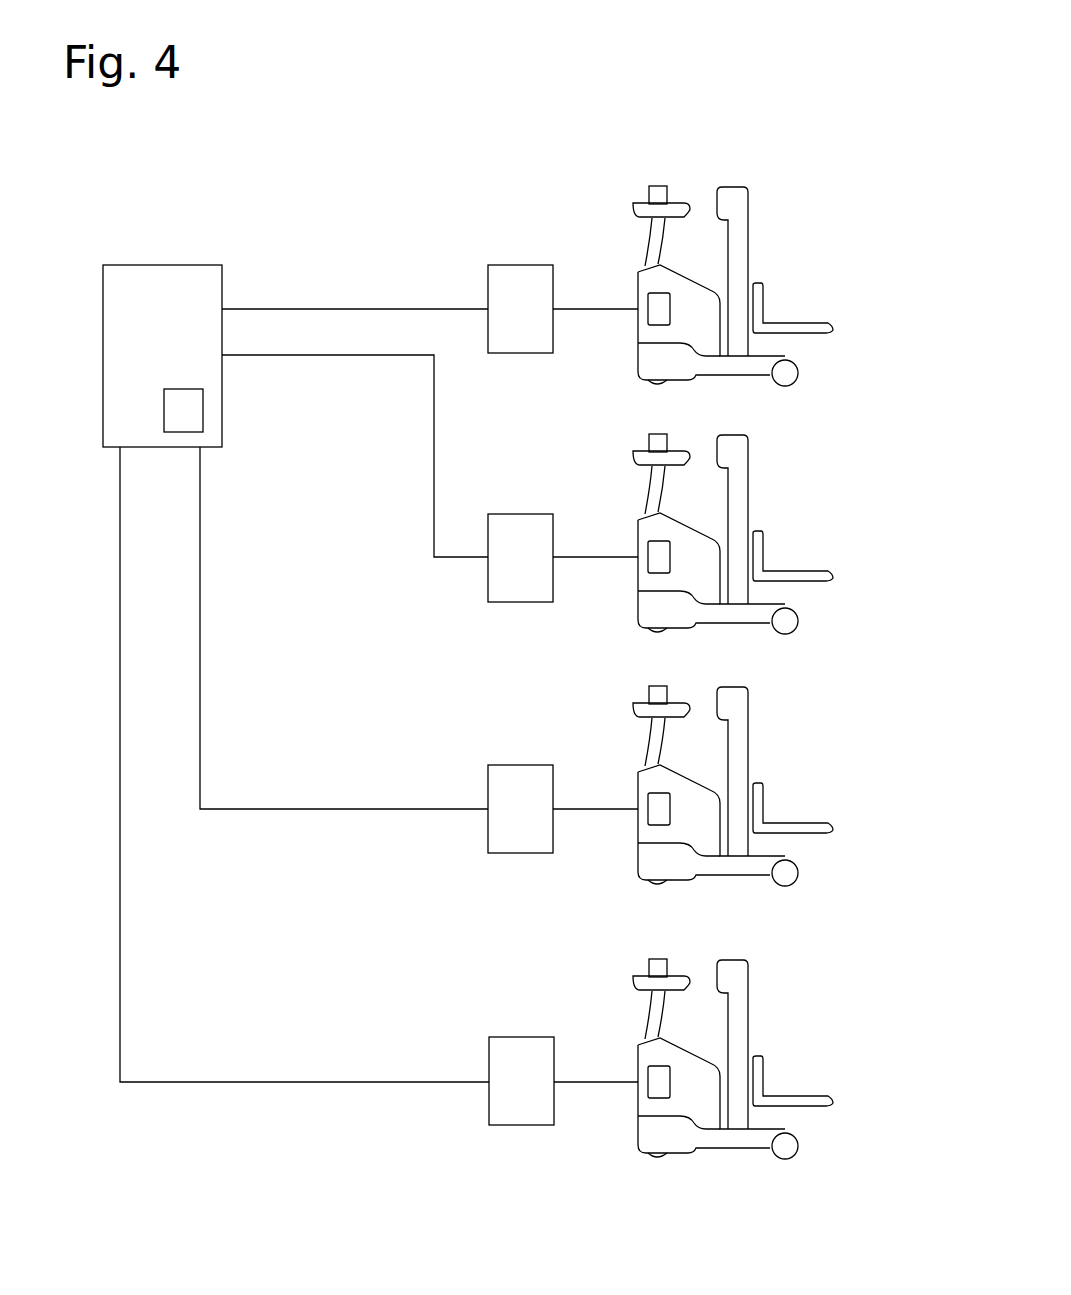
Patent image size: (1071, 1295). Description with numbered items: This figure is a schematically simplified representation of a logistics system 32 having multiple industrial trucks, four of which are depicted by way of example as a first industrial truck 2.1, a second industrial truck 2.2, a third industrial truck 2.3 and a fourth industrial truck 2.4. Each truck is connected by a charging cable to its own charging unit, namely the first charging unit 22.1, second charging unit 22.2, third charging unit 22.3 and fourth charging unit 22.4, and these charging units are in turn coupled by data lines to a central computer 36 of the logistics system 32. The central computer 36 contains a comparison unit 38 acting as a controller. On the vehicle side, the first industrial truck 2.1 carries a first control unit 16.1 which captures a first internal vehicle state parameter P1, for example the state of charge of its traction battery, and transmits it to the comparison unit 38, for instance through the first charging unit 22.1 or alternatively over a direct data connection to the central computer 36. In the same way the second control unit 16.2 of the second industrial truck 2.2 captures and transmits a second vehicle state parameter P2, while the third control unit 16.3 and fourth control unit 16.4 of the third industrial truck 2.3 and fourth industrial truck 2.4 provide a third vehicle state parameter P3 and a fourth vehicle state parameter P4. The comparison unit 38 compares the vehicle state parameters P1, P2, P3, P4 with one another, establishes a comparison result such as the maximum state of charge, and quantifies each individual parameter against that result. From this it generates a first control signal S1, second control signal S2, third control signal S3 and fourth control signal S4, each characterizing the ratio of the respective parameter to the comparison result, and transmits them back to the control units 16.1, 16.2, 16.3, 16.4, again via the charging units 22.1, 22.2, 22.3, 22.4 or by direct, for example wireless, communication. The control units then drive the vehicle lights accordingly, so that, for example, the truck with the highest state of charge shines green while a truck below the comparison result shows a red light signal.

The logistics system 32 is at (752, 88).
The central computer 36 is at (162, 265).
The comparison unit 38 is at (192, 412).
The first charging unit 22.1 is at (543, 323).
The second charging unit 22.2 is at (543, 572).
The third charging unit 22.3 is at (543, 823).
The fourth charging unit 22.4 is at (544, 1095).
The first control unit 16.1 is at (654, 304).
The second control unit 16.2 is at (623, 530).
The third control unit 16.3 is at (623, 783).
The fourth control unit 16.4 is at (623, 1056).
The first industrial truck 2.1 is at (814, 258).
The second industrial truck 2.2 is at (758, 534).
The third industrial truck 2.3 is at (758, 786).
The fourth industrial truck 2.4 is at (758, 1059).
The first internal vehicle state parameter P1 is at (445, 280).
The second internal vehicle state parameter P2 is at (414, 460).
The third vehicle state parameter P3 is at (226, 638).
The fourth vehicle state parameter P4 is at (137, 864).
The first control signal S1 is at (435, 326).
The second control signal S2 is at (455, 373).
The third control signal S3 is at (185, 667).
The fourth control signal S4 is at (107, 790).